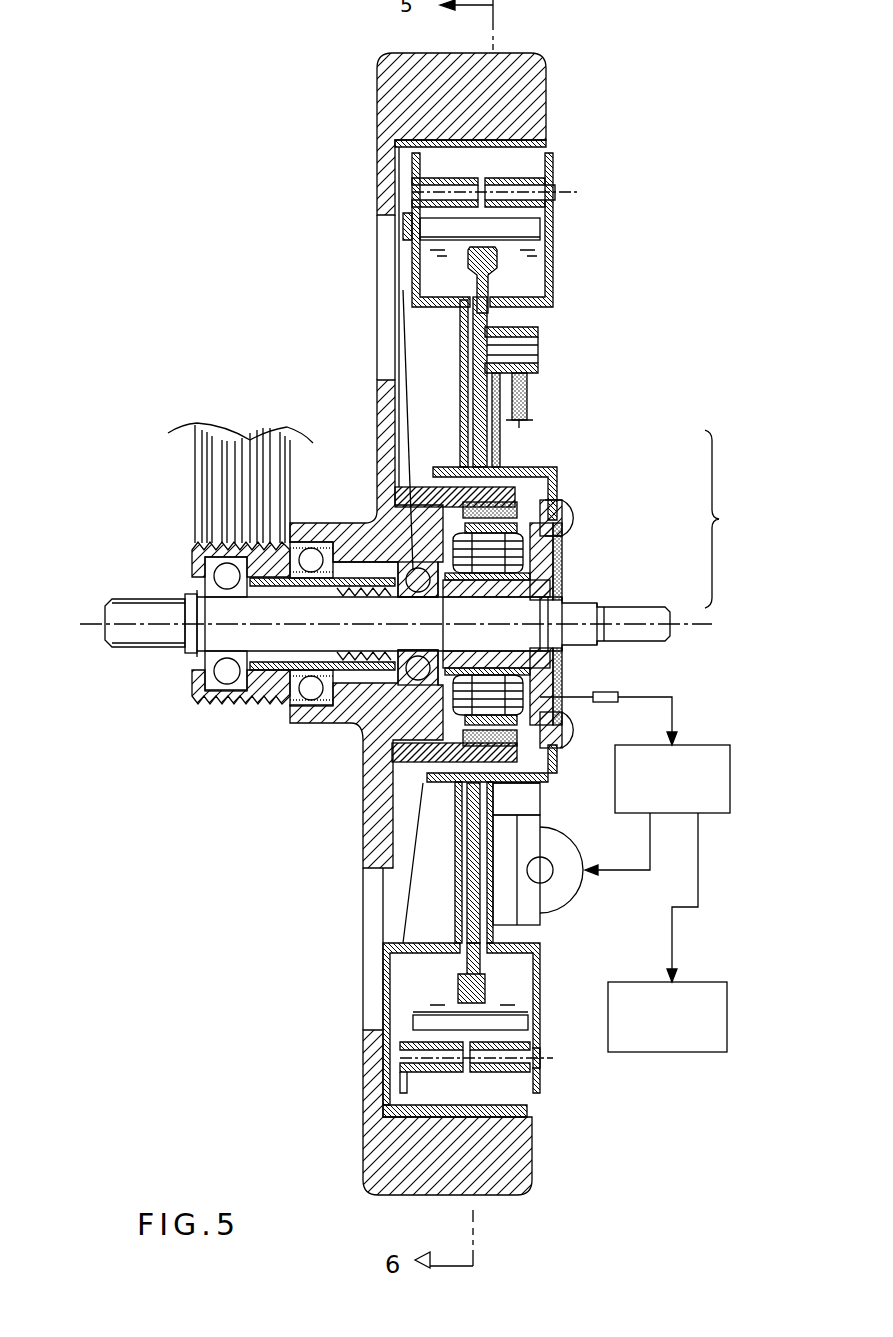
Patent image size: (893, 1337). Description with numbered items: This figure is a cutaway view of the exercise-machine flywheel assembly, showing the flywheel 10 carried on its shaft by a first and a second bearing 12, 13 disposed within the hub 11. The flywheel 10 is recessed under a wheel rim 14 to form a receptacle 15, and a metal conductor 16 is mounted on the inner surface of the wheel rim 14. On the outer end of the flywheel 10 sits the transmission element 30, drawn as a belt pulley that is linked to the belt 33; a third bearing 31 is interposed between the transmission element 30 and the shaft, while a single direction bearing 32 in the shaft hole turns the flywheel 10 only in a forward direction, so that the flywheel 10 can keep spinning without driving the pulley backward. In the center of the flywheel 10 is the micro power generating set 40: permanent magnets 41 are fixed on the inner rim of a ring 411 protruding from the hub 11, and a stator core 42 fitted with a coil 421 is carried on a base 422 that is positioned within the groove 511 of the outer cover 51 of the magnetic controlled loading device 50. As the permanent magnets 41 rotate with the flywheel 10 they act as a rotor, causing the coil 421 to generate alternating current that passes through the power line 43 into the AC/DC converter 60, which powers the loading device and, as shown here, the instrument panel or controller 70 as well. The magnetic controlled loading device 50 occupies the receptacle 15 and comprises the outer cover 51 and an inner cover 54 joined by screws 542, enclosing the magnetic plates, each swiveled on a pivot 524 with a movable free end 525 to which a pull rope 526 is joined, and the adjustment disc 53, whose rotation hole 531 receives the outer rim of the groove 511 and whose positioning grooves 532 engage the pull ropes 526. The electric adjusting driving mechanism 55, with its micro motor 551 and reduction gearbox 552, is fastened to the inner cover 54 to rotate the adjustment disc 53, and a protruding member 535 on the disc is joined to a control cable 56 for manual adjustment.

The flywheel 10 is at (374, 127).
The hub 11 is at (385, 525).
The first bearing 12 is at (378, 470).
The second bearing 13 is at (311, 548).
The wheel rim 14 is at (520, 88).
The receptacle 15 is at (450, 162).
The metal conductor 16 is at (545, 160).
The transmission element 30 is at (240, 560).
The third bearing 31 is at (225, 575).
The single direction bearing 32 is at (262, 707).
The belt 33 is at (238, 470).
The micro power generating set 40 is at (728, 519).
The permanent magnets 41 is at (562, 520).
The ring 411 is at (530, 480).
The stator core 42 is at (567, 553).
The coil 421 is at (567, 562).
The base 422 is at (567, 582).
The power line 43 is at (577, 697).
The magnetic controlled loading device 50 is at (620, 342).
The outer cover 51 is at (463, 333).
The groove 511 is at (404, 470).
The pivot 524 is at (445, 230).
The free end 525 is at (437, 1025).
The pull rope 526 is at (440, 1000).
The adjustment disc 53 is at (466, 858).
The rotation hole 531 is at (440, 776).
The positioning grooves 532 is at (490, 262).
The protruding member 535 is at (505, 330).
The inner cover 54 is at (500, 445).
The screws 542 is at (557, 192).
The electric adjusting driving mechanism 55 is at (557, 923).
The micro motor 551 is at (560, 897).
The reduction gearbox 552 is at (535, 800).
The control cable 56 is at (520, 410).
The AC/DC converter 60 is at (720, 770).
The instrument panel or controller 70 is at (718, 1015).